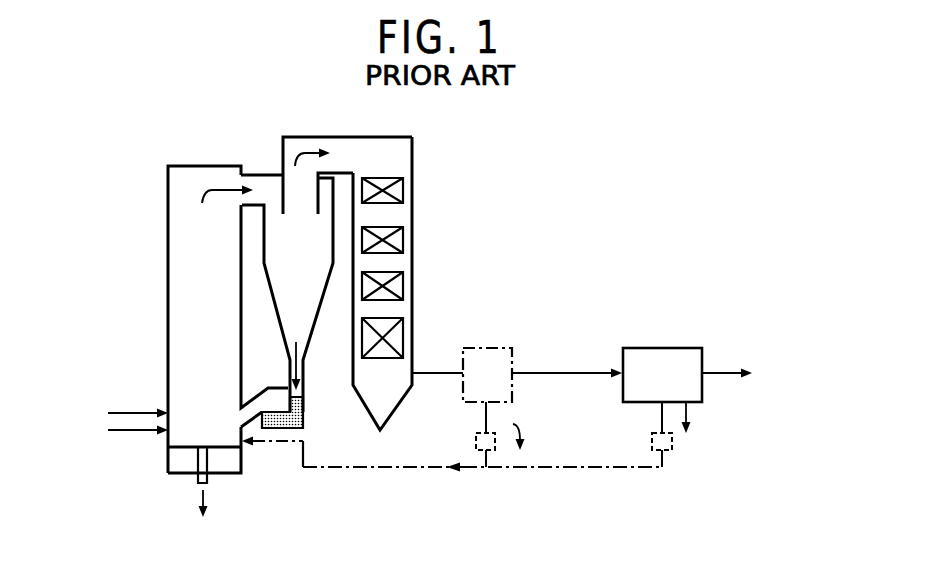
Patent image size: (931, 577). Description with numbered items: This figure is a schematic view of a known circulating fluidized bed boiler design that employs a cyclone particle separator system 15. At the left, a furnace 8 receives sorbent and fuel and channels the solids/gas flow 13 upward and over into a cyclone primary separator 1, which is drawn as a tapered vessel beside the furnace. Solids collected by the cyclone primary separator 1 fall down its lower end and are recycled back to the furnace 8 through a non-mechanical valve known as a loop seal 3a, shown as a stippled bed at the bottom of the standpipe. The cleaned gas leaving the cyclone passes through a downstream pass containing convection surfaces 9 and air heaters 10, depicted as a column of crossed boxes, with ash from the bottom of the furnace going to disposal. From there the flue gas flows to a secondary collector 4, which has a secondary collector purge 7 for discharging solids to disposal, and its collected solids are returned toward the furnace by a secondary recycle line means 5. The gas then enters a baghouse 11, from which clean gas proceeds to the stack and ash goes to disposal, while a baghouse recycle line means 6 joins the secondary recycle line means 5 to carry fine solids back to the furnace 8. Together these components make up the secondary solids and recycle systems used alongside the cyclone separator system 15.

The cyclone particle separator system 15 is at (99, 187).
The furnace 8 is at (183, 318).
The solids/gas flow 13 is at (213, 190).
The cyclone primary separator 1 is at (306, 297).
The loop seal 3a is at (303, 410).
The convection surfaces 9 is at (397, 242).
The air heaters 10 is at (397, 335).
The secondary collector 4 is at (490, 358).
The secondary collector purge 7 is at (487, 415).
The secondary recycle line means 5 is at (360, 467).
The baghouse recycle line means 6 is at (535, 470).
The baghouse 11 is at (663, 357).